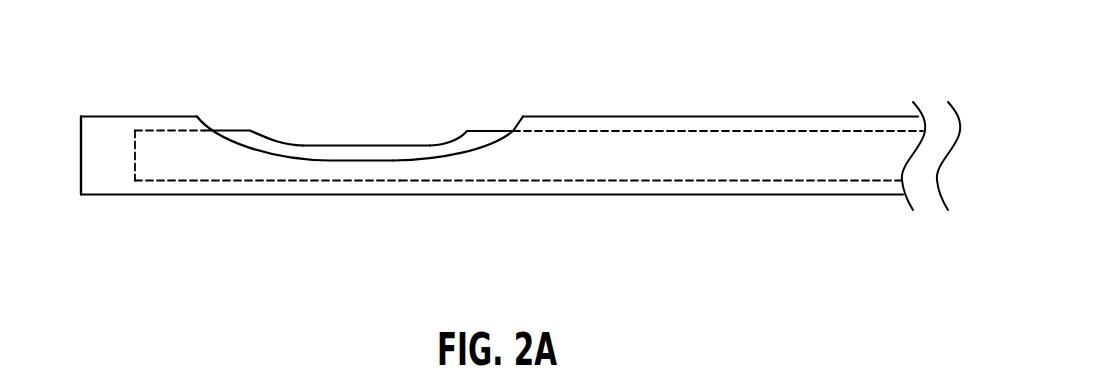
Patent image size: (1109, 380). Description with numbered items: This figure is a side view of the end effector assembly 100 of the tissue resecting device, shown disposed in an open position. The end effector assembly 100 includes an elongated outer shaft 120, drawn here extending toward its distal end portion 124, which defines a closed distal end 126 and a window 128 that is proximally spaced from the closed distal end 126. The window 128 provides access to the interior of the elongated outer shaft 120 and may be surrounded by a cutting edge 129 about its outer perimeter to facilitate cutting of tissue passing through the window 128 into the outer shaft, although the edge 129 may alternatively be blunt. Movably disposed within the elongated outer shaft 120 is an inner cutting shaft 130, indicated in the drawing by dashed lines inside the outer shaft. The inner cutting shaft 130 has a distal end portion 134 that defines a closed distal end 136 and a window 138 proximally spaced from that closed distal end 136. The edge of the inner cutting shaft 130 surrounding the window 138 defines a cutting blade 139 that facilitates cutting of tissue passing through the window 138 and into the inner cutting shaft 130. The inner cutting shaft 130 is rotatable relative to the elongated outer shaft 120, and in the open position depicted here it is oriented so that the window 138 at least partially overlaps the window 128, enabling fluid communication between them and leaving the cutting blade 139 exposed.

The end effector assembly 100 is at (727, 54).
The elongated outer shaft 120 is at (732, 195).
The distal end portion 124 is at (155, 116).
The closed distal end 126 is at (80, 142).
The window 128 is at (477, 140).
The cutting edge 129 is at (285, 157).
The inner cutting shaft 130 is at (573, 182).
The distal end portion 134 is at (195, 182).
The closed distal end 136 is at (135, 155).
The window 138 is at (372, 145).
The cutting blade 139 is at (303, 145).